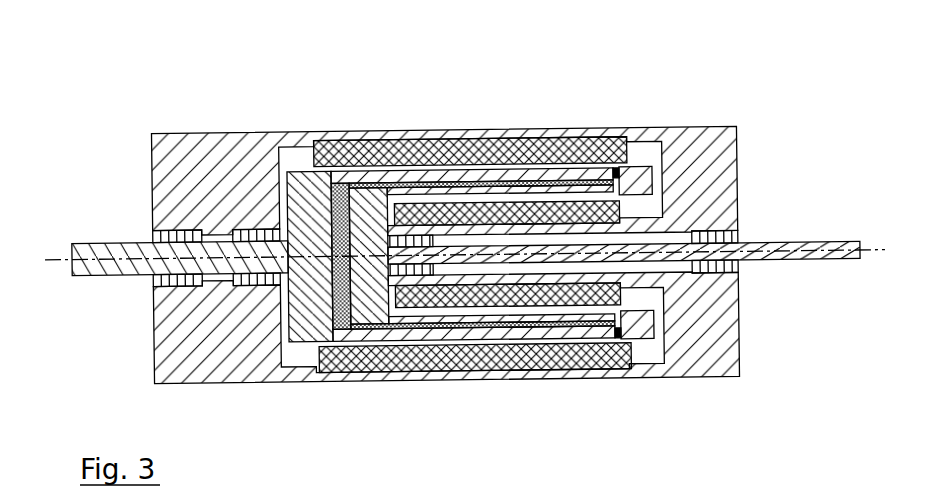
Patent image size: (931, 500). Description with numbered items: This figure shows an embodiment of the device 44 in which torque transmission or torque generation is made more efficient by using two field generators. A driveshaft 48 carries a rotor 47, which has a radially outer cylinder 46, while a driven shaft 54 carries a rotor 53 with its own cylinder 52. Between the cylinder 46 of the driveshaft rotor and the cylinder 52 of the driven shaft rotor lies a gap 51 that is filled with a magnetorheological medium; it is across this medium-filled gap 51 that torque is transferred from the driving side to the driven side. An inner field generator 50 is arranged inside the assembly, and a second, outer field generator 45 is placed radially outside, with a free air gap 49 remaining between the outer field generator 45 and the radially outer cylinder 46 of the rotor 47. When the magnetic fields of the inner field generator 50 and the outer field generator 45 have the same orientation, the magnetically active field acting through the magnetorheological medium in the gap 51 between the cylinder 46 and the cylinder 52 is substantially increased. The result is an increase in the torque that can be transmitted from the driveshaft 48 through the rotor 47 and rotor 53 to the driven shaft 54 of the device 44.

The device 44 is at (138, 117).
The outer field generator 45 is at (482, 138).
The radially outer cylinder 46 is at (588, 172).
The rotor 47 is at (303, 168).
The driveshaft 48 is at (103, 254).
The free air gap 49 is at (388, 138).
The inner field generator 50 is at (612, 294).
The gap 51 is at (472, 327).
The cylinder 52 is at (553, 317).
The rotor 53 is at (370, 328).
The driven shaft 54 is at (806, 240).